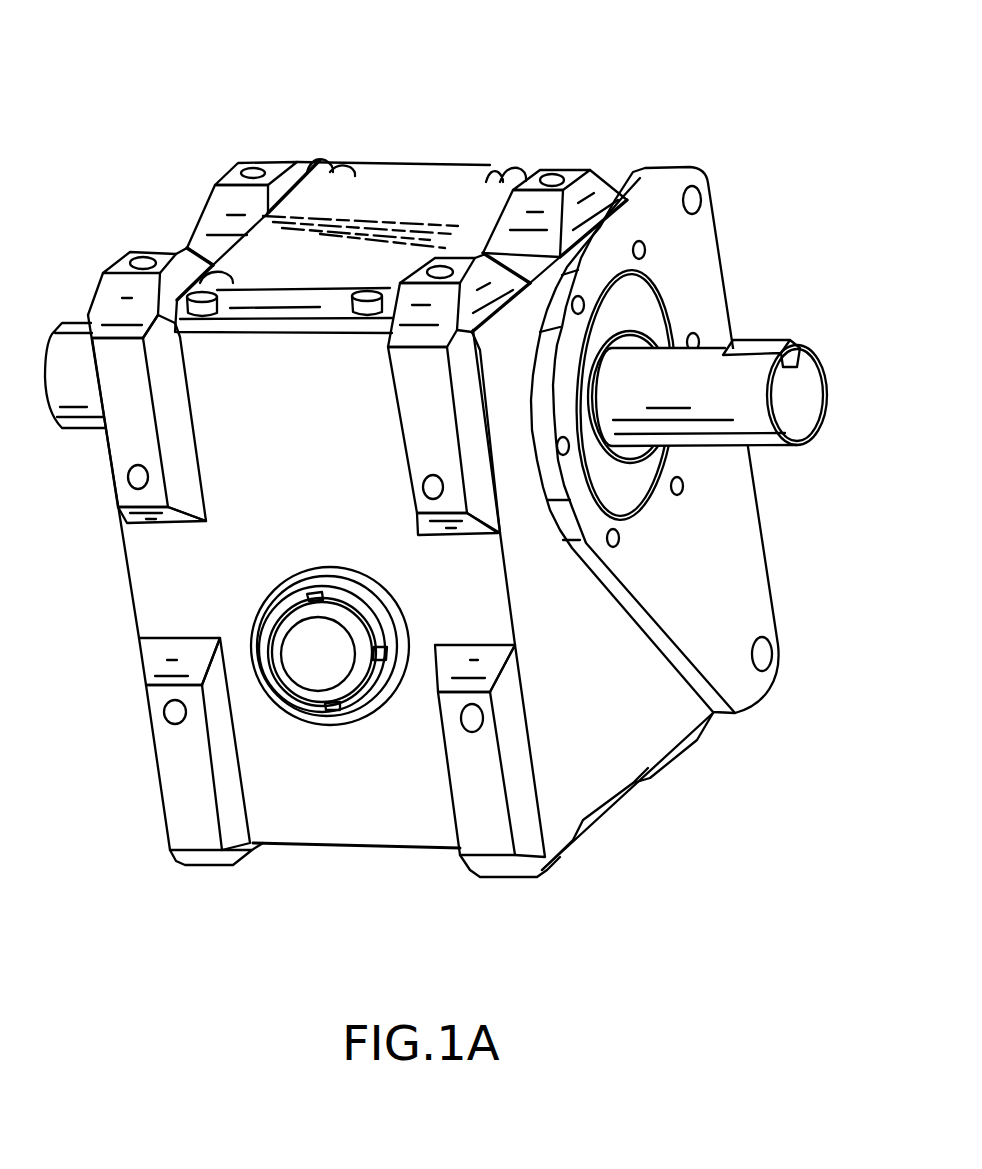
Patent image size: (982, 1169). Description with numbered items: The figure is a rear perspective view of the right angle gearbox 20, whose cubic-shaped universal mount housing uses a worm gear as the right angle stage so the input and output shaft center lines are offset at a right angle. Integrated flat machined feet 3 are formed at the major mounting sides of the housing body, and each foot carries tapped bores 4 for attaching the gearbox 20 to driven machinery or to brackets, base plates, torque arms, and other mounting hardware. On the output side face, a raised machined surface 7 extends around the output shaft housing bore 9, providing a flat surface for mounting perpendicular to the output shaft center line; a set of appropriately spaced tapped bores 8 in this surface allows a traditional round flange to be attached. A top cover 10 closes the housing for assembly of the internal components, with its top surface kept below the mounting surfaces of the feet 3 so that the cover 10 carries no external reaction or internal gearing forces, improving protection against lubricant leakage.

The flat machined feet 3 is at (112, 498).
The tapped bores 4 is at (128, 478).
The raised machined surfaces 7 is at (757, 600).
The tapped bores 8 is at (686, 484).
The output shaft housing bore 9 is at (670, 297).
The top cover 10 is at (417, 180).
The right angle gearbox 20 is at (200, 115).